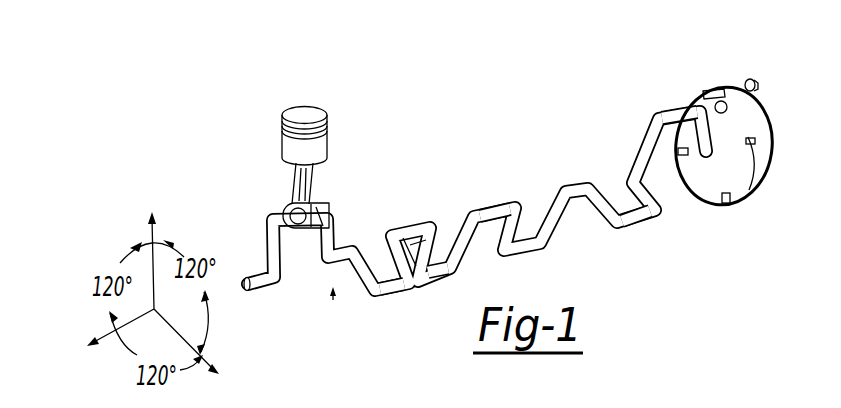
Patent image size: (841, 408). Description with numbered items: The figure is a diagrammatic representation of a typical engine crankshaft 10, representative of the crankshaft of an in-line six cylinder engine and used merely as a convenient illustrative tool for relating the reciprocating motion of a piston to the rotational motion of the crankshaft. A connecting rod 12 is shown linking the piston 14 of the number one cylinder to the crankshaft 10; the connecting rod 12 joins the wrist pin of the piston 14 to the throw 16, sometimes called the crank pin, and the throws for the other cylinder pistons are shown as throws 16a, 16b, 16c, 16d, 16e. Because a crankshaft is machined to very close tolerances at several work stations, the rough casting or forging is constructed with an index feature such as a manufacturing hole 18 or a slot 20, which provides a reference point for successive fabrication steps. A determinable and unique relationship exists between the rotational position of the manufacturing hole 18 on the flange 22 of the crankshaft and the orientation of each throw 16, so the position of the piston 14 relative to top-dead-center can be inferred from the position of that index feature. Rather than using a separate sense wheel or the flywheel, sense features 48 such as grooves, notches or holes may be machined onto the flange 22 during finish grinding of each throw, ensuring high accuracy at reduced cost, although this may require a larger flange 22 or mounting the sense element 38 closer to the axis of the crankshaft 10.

The crankshaft 10 is at (331, 300).
The connecting rod 12 is at (313, 186).
The piston 14 is at (327, 147).
The throw 16 is at (330, 206).
The throw 16a is at (409, 296).
The throw 16b is at (450, 283).
The throw 16c is at (524, 172).
The throw 16d is at (627, 234).
The throw 16e is at (678, 106).
The manufacturing hole 18 is at (700, 90).
The slot 20 is at (747, 198).
The flange 22 is at (721, 181).
The sense element 38 is at (778, 54).
The sense features 48 is at (682, 172).